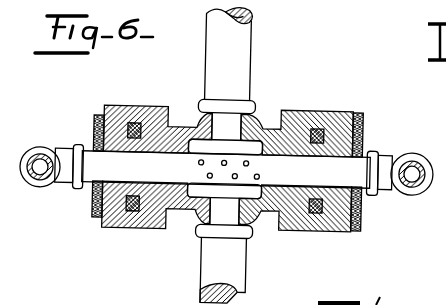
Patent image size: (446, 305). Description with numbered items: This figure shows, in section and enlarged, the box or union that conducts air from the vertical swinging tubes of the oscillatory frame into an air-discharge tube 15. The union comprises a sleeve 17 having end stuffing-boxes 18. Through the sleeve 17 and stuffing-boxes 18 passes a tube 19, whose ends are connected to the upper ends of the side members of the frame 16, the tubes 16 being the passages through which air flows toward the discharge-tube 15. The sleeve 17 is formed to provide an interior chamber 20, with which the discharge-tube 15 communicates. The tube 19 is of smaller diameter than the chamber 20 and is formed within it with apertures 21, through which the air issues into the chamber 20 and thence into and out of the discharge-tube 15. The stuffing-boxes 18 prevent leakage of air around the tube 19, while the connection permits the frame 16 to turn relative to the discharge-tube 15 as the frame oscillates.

The discharge-tube 15 is at (237, 52).
The tubes of oscillatory frame 16 is at (43, 177).
The sleeve 17 is at (263, 122).
The stuffing-boxes 18 is at (145, 106).
The tube 19 is at (225, 169).
The interior chamber 20 is at (202, 190).
The apertures 21 is at (236, 179).